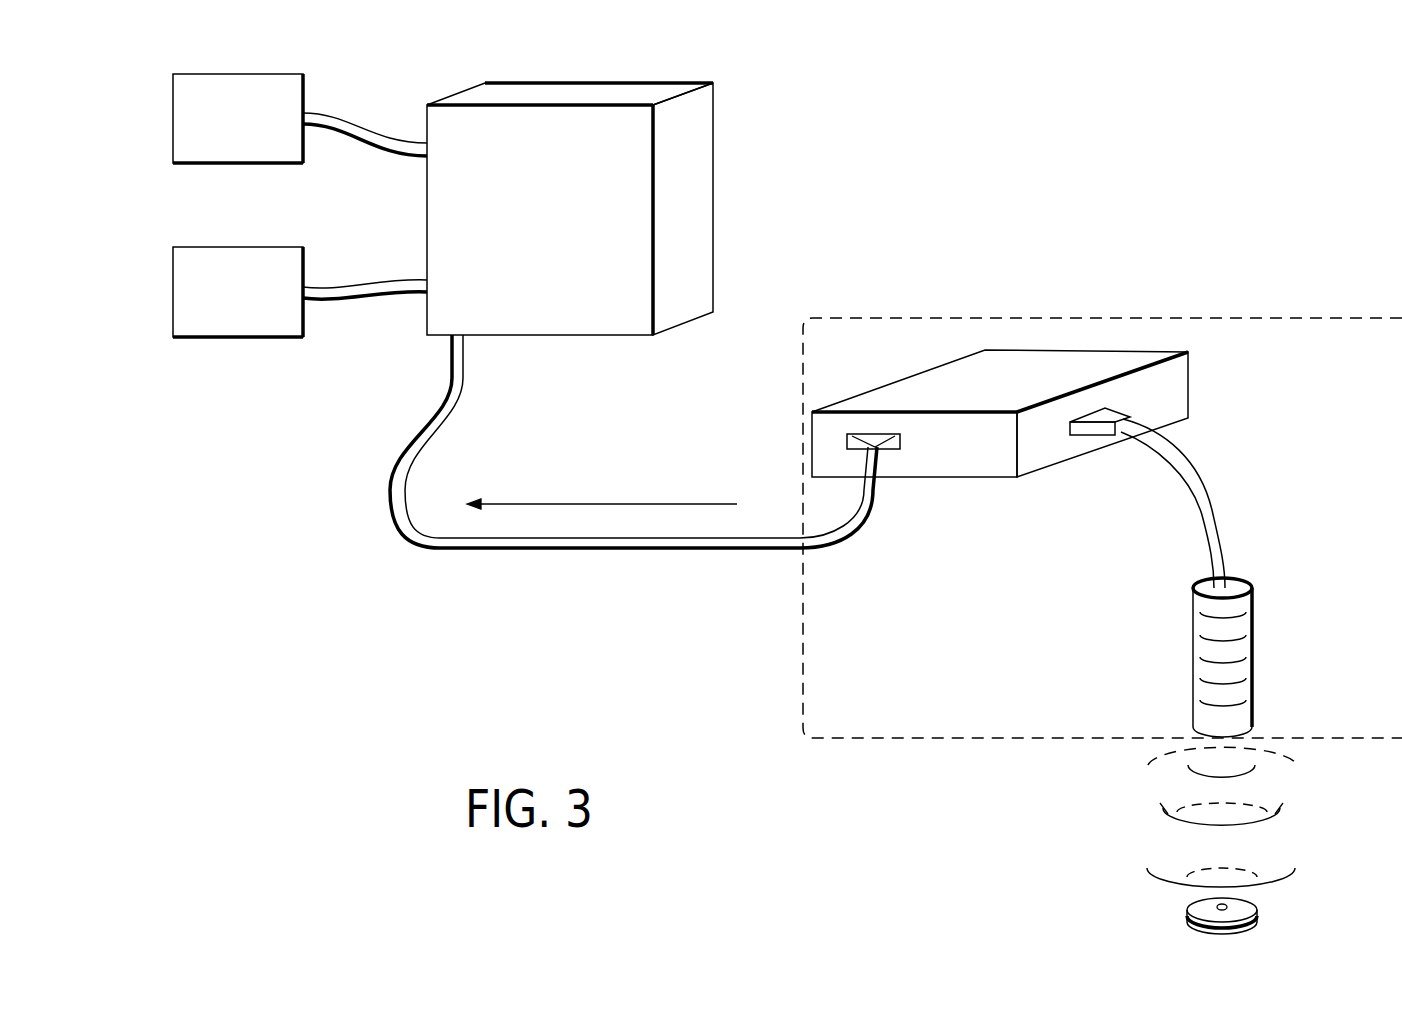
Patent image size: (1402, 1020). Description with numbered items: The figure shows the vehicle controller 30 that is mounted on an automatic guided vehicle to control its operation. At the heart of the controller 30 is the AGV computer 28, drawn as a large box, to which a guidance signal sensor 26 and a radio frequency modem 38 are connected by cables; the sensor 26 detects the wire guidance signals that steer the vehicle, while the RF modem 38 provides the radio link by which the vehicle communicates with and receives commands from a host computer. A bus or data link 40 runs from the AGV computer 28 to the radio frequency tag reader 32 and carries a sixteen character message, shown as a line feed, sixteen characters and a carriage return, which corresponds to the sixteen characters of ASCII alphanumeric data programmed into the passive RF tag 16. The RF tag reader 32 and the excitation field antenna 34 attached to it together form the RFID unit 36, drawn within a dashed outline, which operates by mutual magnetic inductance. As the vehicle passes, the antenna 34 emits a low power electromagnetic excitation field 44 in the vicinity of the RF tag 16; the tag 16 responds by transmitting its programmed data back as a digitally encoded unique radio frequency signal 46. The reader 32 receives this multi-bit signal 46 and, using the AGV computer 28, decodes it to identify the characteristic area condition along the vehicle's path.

The RF tag 16 is at (1268, 910).
The guidance signal sensor 26 is at (217, 337).
The AGV computer 28 is at (722, 160).
The vehicle controller 30 is at (1054, 177).
The radio frequency tag reader 32 is at (1200, 387).
The excitation field antenna 34 is at (1263, 662).
The RFID unit 36 is at (803, 688).
The radio frequency modem 38 is at (207, 163).
The data link 40 is at (550, 562).
The electromagnetic excitation field 44 is at (1265, 776).
The unique radio frequency signal 46 is at (1145, 753).